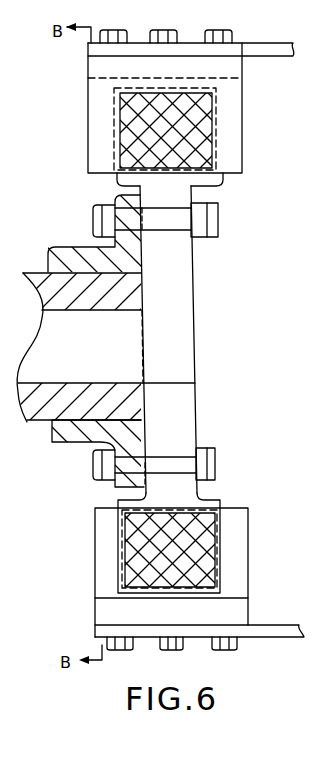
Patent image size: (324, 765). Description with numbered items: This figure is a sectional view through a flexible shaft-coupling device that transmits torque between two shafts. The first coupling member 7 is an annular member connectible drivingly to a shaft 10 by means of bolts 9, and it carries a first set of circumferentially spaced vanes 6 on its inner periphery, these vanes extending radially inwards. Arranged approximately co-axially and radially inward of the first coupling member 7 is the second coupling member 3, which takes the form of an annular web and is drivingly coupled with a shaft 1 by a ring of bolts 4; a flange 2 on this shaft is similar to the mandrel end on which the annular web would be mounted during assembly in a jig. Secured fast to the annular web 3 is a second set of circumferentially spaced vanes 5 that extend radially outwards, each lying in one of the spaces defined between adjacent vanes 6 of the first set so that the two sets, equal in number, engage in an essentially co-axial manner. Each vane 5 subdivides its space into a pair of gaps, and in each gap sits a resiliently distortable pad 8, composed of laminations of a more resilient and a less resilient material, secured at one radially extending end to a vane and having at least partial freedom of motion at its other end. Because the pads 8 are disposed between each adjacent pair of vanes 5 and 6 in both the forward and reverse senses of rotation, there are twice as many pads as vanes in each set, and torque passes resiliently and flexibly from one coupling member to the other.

The shaft 1 is at (120, 298).
The flange 2 is at (130, 248).
The second coupling member 3 is at (180, 246).
The bolts 4 is at (167, 220).
The vanes of the second set 5 is at (220, 188).
The vanes of the first set 6 is at (232, 124).
The first coupling member 7 is at (227, 72).
The resiliently distortable pads 8 is at (190, 137).
The bolts 9 is at (232, 42).
The shaft 10 is at (278, 47).